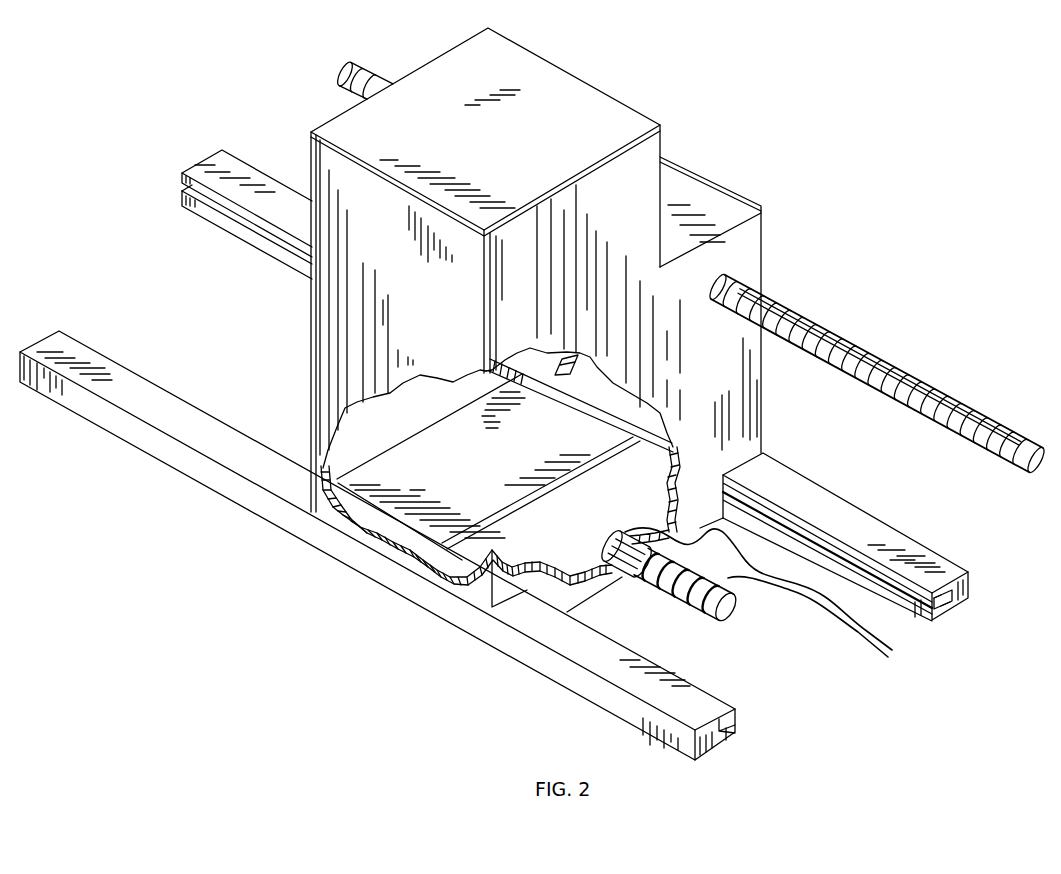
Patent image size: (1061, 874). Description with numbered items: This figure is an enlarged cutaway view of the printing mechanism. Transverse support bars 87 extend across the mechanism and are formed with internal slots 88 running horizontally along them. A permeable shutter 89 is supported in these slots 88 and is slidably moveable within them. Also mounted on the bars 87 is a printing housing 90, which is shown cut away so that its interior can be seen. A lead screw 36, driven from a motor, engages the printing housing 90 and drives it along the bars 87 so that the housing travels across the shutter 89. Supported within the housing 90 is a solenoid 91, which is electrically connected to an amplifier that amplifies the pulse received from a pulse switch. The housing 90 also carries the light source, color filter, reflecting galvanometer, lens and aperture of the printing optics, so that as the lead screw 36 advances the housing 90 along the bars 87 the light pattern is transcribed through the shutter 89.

The lead screw 36 is at (868, 352).
The transverse support bars 87 is at (973, 581).
The internal slots 88 is at (945, 609).
The permeable shutter 89 is at (537, 490).
The printing housing 90 is at (621, 103).
The solenoid 91 is at (740, 605).